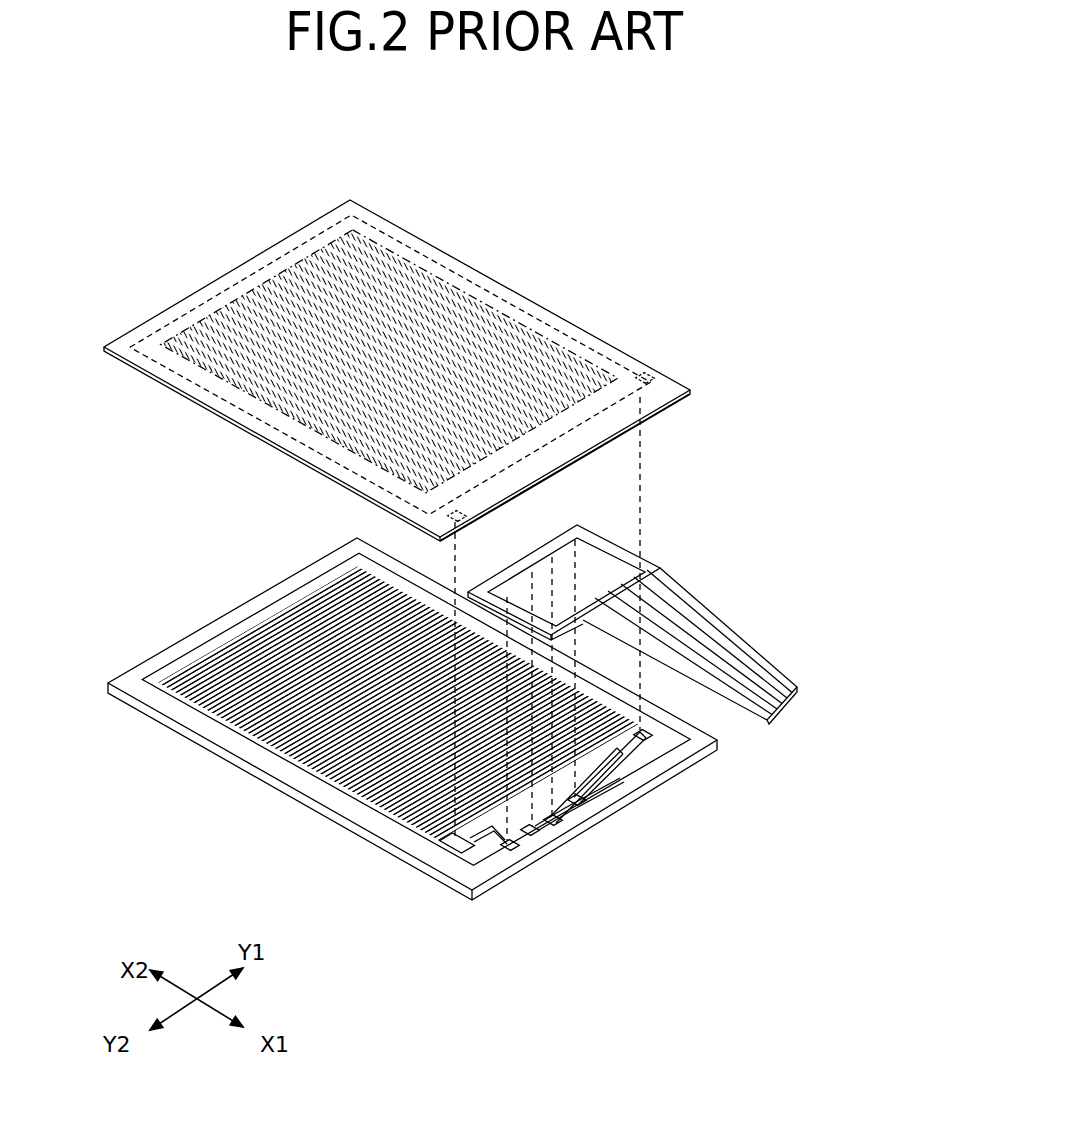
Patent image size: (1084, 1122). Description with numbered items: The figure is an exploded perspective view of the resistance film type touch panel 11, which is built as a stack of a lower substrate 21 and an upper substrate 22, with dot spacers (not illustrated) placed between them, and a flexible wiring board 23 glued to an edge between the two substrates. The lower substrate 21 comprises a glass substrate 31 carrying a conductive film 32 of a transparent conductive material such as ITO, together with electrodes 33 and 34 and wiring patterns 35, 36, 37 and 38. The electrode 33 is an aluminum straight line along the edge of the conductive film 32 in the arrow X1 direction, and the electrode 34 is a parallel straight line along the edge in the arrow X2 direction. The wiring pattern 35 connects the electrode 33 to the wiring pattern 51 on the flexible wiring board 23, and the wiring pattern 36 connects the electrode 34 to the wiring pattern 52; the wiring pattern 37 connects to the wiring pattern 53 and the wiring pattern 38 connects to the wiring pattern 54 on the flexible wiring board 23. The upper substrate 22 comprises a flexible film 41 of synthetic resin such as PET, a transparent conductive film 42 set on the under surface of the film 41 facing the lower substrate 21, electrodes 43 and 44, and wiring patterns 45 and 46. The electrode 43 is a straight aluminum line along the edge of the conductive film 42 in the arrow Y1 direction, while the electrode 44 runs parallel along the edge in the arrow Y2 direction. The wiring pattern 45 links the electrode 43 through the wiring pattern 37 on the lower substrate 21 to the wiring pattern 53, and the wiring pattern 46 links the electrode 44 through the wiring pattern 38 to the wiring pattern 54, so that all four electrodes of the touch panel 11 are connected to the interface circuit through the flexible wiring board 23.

The touch panel 11 is at (142, 173).
The upper substrate 22 is at (560, 318).
The film 41 is at (214, 292).
The conductive film 42 is at (297, 262).
The electrode 43 is at (488, 277).
The electrode 44 is at (250, 418).
The wiring pattern 45 is at (647, 372).
The wiring pattern 46 is at (455, 518).
The lower substrate 21 is at (240, 600).
The glass substrate 31 is at (322, 818).
The electrode 34 is at (176, 655).
The conductive film 32 is at (207, 758).
The electrode 33 is at (422, 848).
The wiring pattern 35 is at (547, 826).
The wiring pattern 36 is at (630, 762).
The wiring pattern 37 is at (557, 822).
The wiring pattern 38 is at (523, 858).
The flexible wiring board 23 is at (815, 715).
The wiring pattern 51 is at (533, 572).
The wiring pattern 52 is at (576, 548).
The wiring pattern 53 is at (553, 557).
The wiring pattern 54 is at (510, 592).